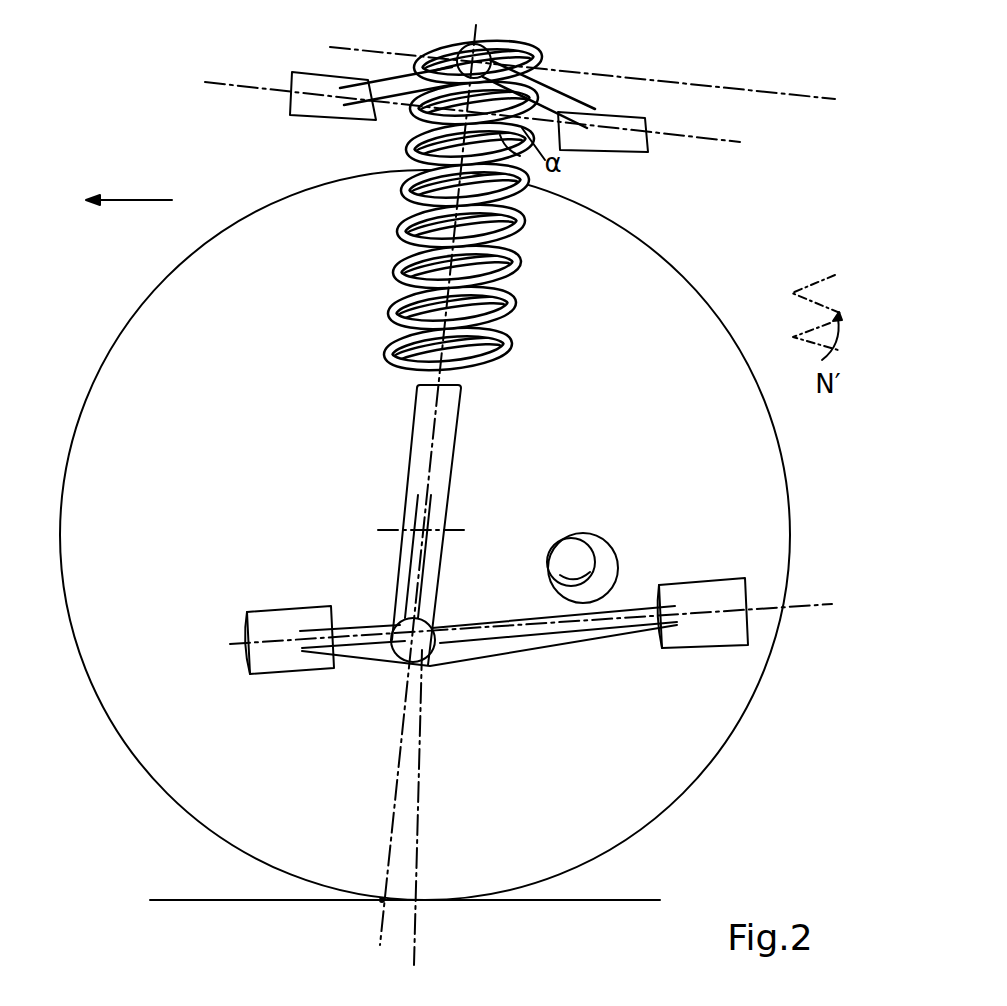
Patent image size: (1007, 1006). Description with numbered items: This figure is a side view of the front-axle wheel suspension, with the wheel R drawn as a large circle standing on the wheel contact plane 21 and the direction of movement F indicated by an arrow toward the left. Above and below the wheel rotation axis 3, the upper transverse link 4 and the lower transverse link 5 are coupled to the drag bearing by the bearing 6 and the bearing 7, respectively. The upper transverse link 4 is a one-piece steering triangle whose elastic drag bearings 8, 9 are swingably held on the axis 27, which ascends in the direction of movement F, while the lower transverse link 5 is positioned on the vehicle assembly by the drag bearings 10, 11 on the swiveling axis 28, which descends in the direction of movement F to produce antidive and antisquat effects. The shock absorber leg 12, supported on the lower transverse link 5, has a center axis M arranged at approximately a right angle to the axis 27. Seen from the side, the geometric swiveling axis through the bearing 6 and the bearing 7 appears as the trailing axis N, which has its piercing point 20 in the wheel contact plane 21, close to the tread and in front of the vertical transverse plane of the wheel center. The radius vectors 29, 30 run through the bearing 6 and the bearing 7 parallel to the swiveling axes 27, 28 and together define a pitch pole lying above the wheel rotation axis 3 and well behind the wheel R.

The wheel rotation axis 3 is at (427, 530).
The upper transverse link 4 is at (558, 87).
The lower transverse link 5 is at (559, 661).
The bearing 6 is at (482, 50).
The bearing 7 is at (393, 667).
The drag bearing 8 is at (310, 73).
The drag bearing 9 is at (633, 118).
The drag bearing 10 is at (263, 663).
The drag bearing 11 is at (700, 583).
The shock absorber leg 12 is at (511, 372).
The piercing point 20 is at (382, 900).
The wheel contact plane 21 is at (595, 905).
The axis 27 is at (695, 138).
The swiveling axis 28 is at (767, 610).
The radius vector 29 is at (807, 96).
The radius vector 30 is at (790, 606).
The wheel R is at (700, 752).
The direction of movement F is at (129, 185).
The center axis M is at (505, 282).
The trailing axis N is at (397, 773).